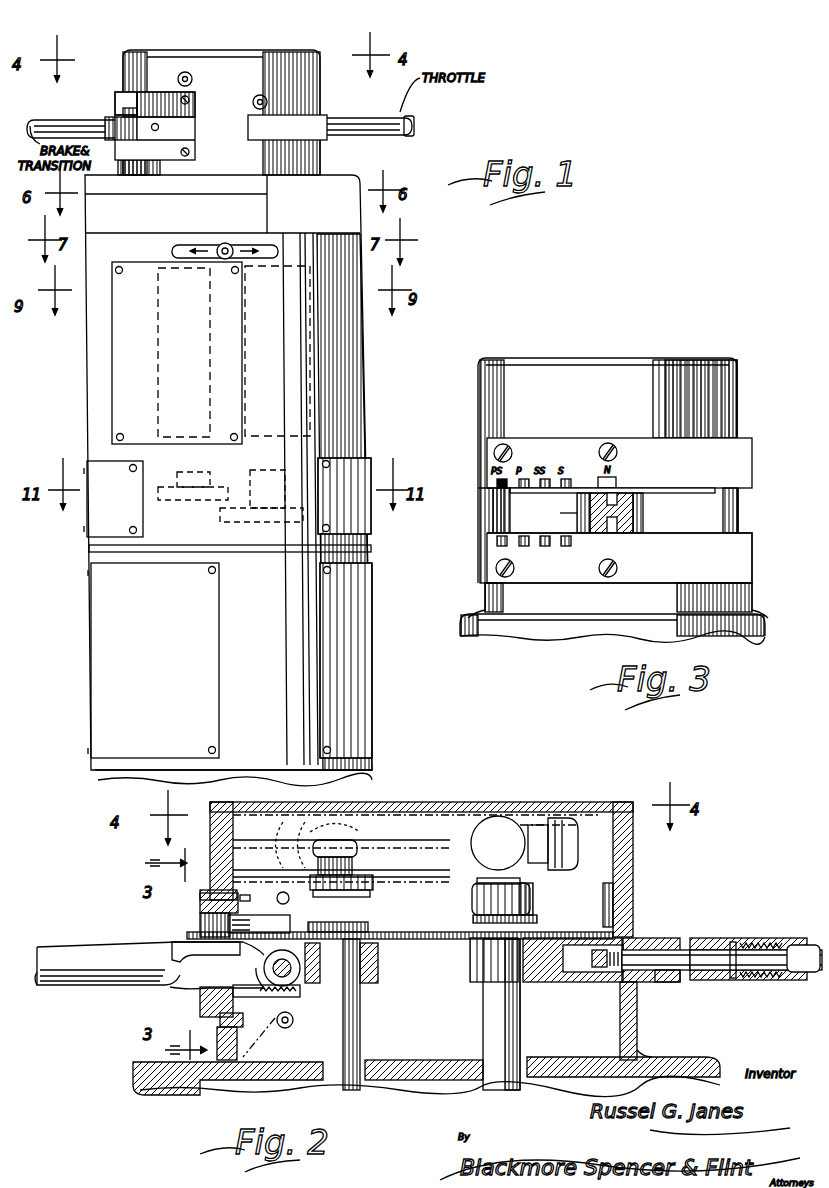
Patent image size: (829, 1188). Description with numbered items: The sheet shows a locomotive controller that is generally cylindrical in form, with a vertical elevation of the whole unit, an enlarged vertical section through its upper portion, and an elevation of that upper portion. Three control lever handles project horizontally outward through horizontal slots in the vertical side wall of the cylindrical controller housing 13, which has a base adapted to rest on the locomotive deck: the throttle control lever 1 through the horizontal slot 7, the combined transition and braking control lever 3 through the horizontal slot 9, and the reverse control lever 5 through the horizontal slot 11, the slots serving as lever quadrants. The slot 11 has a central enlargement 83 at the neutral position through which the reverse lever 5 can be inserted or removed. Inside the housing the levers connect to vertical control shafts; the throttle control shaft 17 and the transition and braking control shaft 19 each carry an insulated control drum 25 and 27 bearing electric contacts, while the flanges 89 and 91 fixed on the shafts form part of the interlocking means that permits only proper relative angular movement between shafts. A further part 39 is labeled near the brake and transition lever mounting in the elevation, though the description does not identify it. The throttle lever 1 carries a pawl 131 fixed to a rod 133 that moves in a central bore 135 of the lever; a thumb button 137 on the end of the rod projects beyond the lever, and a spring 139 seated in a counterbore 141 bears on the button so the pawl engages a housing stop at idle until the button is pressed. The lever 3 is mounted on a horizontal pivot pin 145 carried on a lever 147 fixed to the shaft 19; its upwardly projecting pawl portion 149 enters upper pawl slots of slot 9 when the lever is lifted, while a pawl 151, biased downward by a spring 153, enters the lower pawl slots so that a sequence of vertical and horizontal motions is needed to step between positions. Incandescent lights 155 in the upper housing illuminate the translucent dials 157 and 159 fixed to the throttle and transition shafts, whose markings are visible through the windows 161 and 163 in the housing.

In FIG. 1, the throttle control lever 1 is at (365, 105).
In FIG. 2, the throttle control lever 1 is at (665, 945).
In FIG. 1, the transition and braking control lever 3 is at (62, 122).
In FIG. 3, the transition and braking control lever 3 is at (575, 513).
In FIG. 2, the transition and braking control lever 3 is at (92, 960).
In FIG. 1, the reverse control lever 5 is at (228, 247).
In FIG. 2, the reverse control lever 5 is at (272, 915).
In FIG. 1, the horizontal slot 7 is at (315, 95).
In FIG. 2, the horizontal slot 7 is at (638, 1000).
In FIG. 1, the horizontal slot 9 is at (130, 108).
In FIG. 3, the horizontal slot 9 is at (574, 536).
In FIG. 1, the horizontal slot 11 is at (200, 248).
In FIG. 1, the controller housing 13 is at (350, 372).
In FIG. 3, the controller housing 13 is at (745, 616).
In FIG. 2, the controller housing 13 is at (690, 1060).
In FIG. 2, the throttle control shaft 17 is at (515, 1030).
In FIG. 2, the transition and braking control shaft 19 is at (360, 1022).
In FIG. 1, the insulated control drum 25 is at (258, 325).
In FIG. 1, the insulated control drum 27 is at (165, 297).
In FIG. 1, the block 39 is at (120, 104).
In FIG. 1, the enlargement 83 is at (225, 245).
In FIG. 1, the flange 89 is at (240, 520).
In FIG. 1, the flange 91 is at (175, 490).
In FIG. 2, the pawl 131 is at (630, 940).
In FIG. 2, the rod 133 is at (715, 945).
In FIG. 2, the central bore 135 is at (668, 980).
In FIG. 1, the thumb button 137 is at (418, 118).
In FIG. 2, the thumb button 137 is at (812, 945).
In FIG. 2, the spring 139 is at (768, 978).
In FIG. 2, the counterbore 141 is at (735, 978).
In FIG. 1, the horizontal pivot pin 145 is at (156, 123).
In FIG. 2, the horizontal pivot pin 145 is at (298, 987).
In FIG. 1, the lever 147 is at (190, 130).
In FIG. 3, the lever 147 is at (645, 515).
In FIG. 2, the lever 147 is at (378, 965).
In FIG. 3, the upwardly projecting pawl portion 149 is at (615, 491).
In FIG. 2, the upwardly projecting pawl portion 149 is at (192, 935).
In FIG. 3, the pawl 151 is at (617, 540).
In FIG. 2, the pawl 151 is at (205, 995).
In FIG. 2, the spring 153 is at (242, 1025).
In FIG. 2, the incandescent lights 155 is at (478, 840).
In FIG. 2, the translucent dial 157 is at (603, 905).
In FIG. 2, the translucent dial 159 is at (380, 880).
In FIG. 1, the window 161 is at (260, 96).
In FIG. 1, the window 163 is at (190, 83).